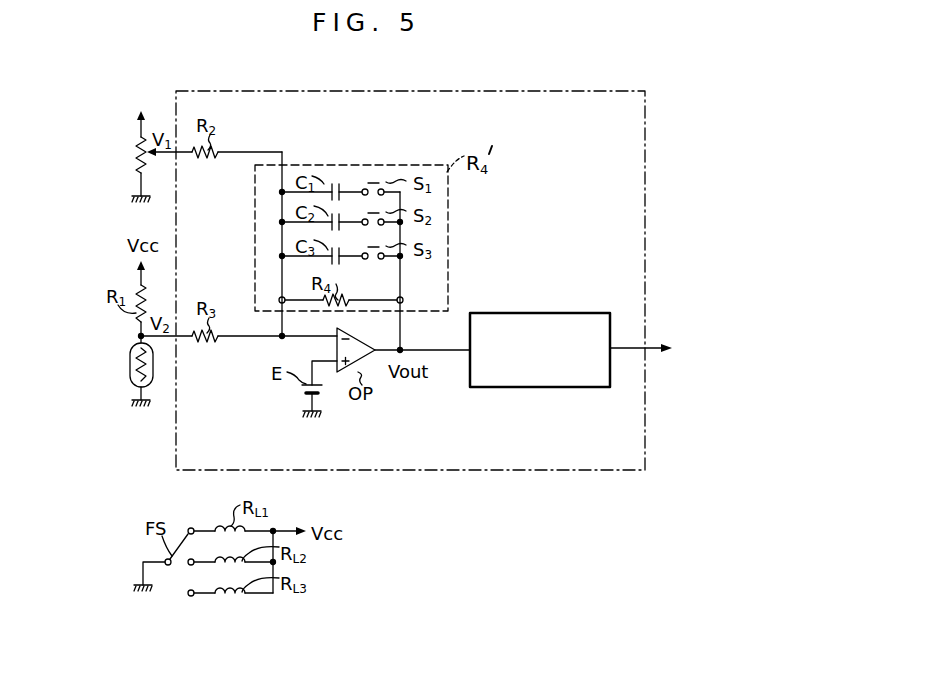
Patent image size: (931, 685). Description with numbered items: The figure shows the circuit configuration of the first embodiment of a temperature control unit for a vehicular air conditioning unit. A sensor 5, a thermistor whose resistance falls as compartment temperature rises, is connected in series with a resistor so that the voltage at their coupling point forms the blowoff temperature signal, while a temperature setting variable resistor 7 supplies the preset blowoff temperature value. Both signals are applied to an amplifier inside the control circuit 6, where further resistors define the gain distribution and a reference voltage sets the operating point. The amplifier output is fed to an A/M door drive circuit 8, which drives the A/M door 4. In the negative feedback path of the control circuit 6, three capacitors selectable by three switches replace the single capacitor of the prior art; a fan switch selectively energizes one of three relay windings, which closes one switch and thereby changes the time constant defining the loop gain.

The A/M door 4 is at (701, 349).
The sensor 5 is at (129, 376).
The control circuit 6 is at (645, 126).
The temperature setting variable resistor 7 is at (135, 151).
The A/M door drive circuit 8 is at (572, 312).